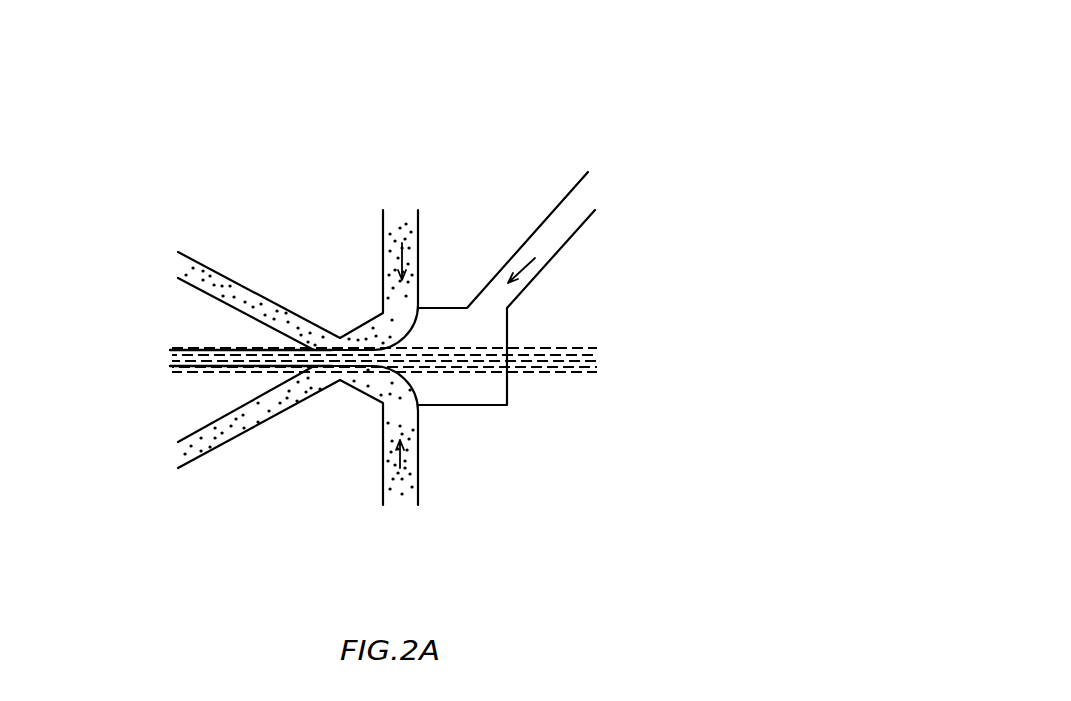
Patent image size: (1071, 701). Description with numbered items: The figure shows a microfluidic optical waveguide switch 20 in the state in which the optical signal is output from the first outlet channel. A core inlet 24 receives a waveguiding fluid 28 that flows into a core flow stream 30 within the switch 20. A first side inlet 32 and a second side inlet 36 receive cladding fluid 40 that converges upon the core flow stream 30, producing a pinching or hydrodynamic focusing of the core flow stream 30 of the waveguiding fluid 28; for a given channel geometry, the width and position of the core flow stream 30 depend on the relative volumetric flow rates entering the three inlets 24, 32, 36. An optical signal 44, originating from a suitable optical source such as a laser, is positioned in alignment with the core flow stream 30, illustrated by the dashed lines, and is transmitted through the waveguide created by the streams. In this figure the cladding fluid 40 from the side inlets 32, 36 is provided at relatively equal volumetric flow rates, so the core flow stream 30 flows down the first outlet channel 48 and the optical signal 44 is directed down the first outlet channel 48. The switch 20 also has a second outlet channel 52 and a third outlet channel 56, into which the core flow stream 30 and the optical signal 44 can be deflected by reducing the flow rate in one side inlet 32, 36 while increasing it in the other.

The switch 20 is at (540, 97).
The core inlet 24 is at (612, 171).
The waveguiding fluid 28 is at (529, 272).
The core flow stream 30 is at (245, 360).
The first side inlet 32 is at (404, 184).
The second side inlet 36 is at (394, 523).
The cladding fluid 40 is at (418, 448).
The optical signal 44 is at (556, 381).
The first outlet channel 48 is at (131, 359).
The second outlet channel 52 is at (156, 248).
The third outlet channel 56 is at (159, 458).